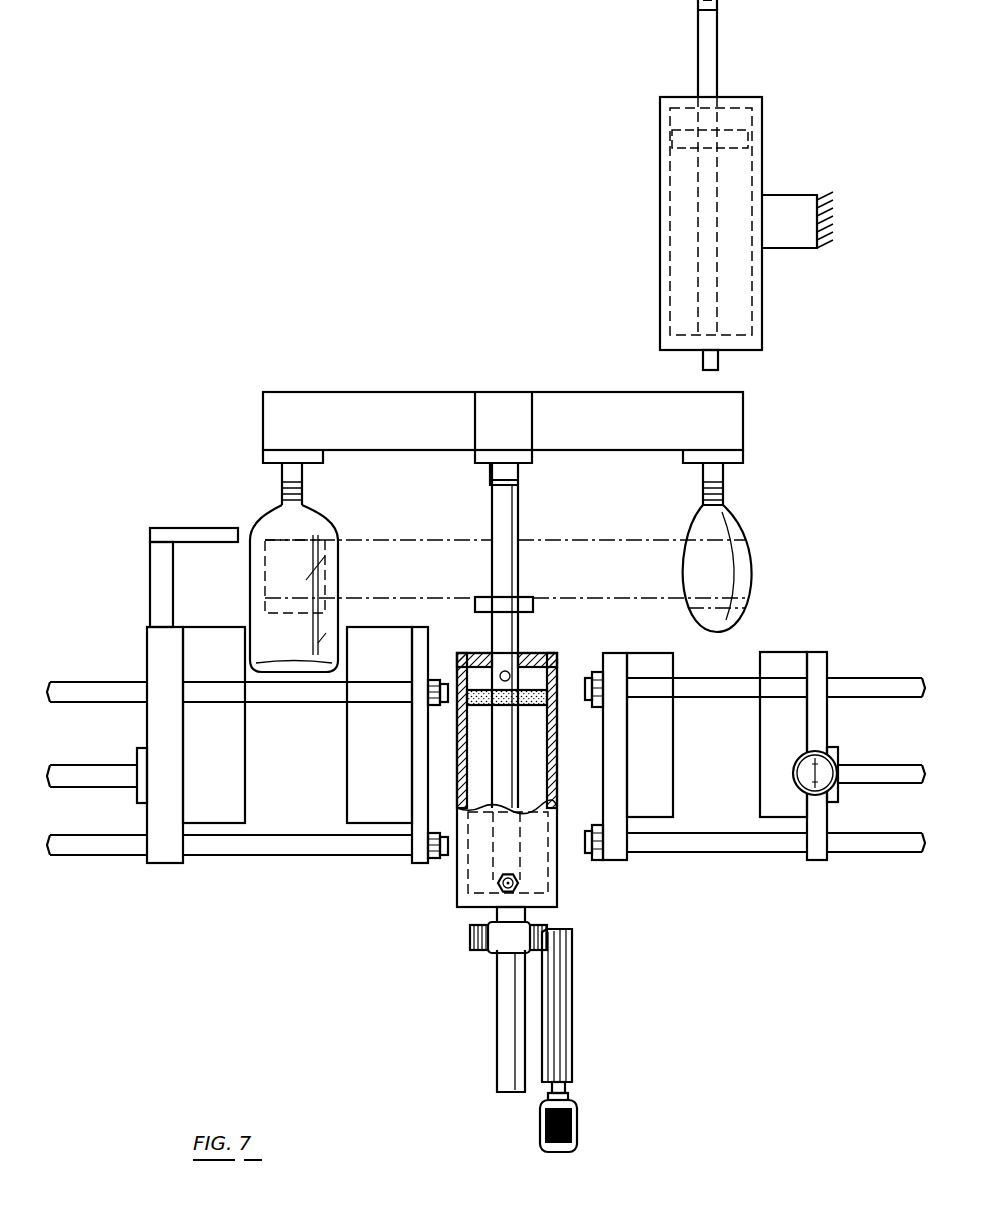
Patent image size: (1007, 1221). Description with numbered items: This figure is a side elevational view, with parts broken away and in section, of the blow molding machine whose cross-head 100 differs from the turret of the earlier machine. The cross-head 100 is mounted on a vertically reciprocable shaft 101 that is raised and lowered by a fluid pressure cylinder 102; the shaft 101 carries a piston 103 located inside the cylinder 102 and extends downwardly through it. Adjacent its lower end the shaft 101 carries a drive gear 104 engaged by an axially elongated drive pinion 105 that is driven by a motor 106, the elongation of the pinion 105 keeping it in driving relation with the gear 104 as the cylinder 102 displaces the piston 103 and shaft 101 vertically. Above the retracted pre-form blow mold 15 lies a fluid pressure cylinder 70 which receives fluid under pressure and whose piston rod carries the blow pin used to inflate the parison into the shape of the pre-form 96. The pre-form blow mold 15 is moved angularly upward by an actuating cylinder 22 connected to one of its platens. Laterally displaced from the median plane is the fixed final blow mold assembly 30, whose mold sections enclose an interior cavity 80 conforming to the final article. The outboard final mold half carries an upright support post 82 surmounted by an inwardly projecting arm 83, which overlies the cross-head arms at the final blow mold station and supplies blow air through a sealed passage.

The fluid pressure cylinder 70 is at (624, 135).
The cross-head 100 is at (506, 388).
The inwardly projecting arm 83 is at (190, 527).
The upright support post 82 is at (158, 570).
The interior cavity 80 is at (255, 590).
The vertically reciprocable shaft 101 is at (519, 506).
The piston 103 is at (532, 693).
The fluid pressure cylinder 102 is at (558, 880).
The drive gear 104 is at (470, 940).
The drive pinion 105 is at (563, 1009).
The motor 106 is at (578, 1132).
The final blow mold assembly 30 is at (266, 868).
The pre-form blow mold 15 is at (750, 868).
The actuating cylinder 22 is at (800, 778).
The pre-form 96 is at (752, 580).